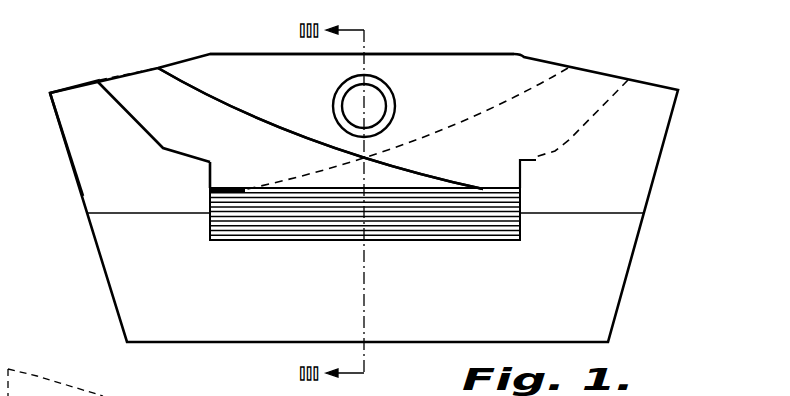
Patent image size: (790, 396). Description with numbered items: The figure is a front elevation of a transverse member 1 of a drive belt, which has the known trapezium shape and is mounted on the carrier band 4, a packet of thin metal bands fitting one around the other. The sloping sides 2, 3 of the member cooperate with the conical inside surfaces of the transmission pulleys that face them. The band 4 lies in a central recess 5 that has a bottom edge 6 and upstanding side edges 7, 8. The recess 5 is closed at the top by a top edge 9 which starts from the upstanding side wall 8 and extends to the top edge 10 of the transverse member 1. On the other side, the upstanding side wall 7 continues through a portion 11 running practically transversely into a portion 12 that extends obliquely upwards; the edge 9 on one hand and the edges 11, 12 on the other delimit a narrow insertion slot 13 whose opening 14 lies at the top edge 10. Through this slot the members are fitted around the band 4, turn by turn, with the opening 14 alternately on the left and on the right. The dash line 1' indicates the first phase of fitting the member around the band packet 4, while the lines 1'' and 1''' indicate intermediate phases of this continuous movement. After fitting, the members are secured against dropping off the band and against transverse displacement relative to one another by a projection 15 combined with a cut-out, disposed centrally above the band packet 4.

The transverse member 1 is at (380, 198).
The dash line indicating first fitting phase 1' is at (55, 372).
The line indicating intermediate fitting phase 1'' is at (129, 382).
The line indicating intermediate fitting phase 1''' is at (212, 388).
The sloping side 2 is at (649, 197).
The sloping side 3 is at (81, 204).
The carrier band 4 is at (458, 220).
The central recess 5 is at (404, 246).
The bottom edge 6 is at (286, 241).
The upstanding side edge 7 is at (208, 226).
The upstanding side edge 8 is at (521, 227).
The top edge of recess 9 is at (421, 174).
The top edge of transverse member 10 is at (412, 54).
The transverse portion 11 is at (184, 161).
The obliquely upward portion 12 is at (143, 125).
The insertion slot 13 is at (206, 126).
The opening of insertion slot 14 is at (118, 77).
The projection 15 is at (380, 96).